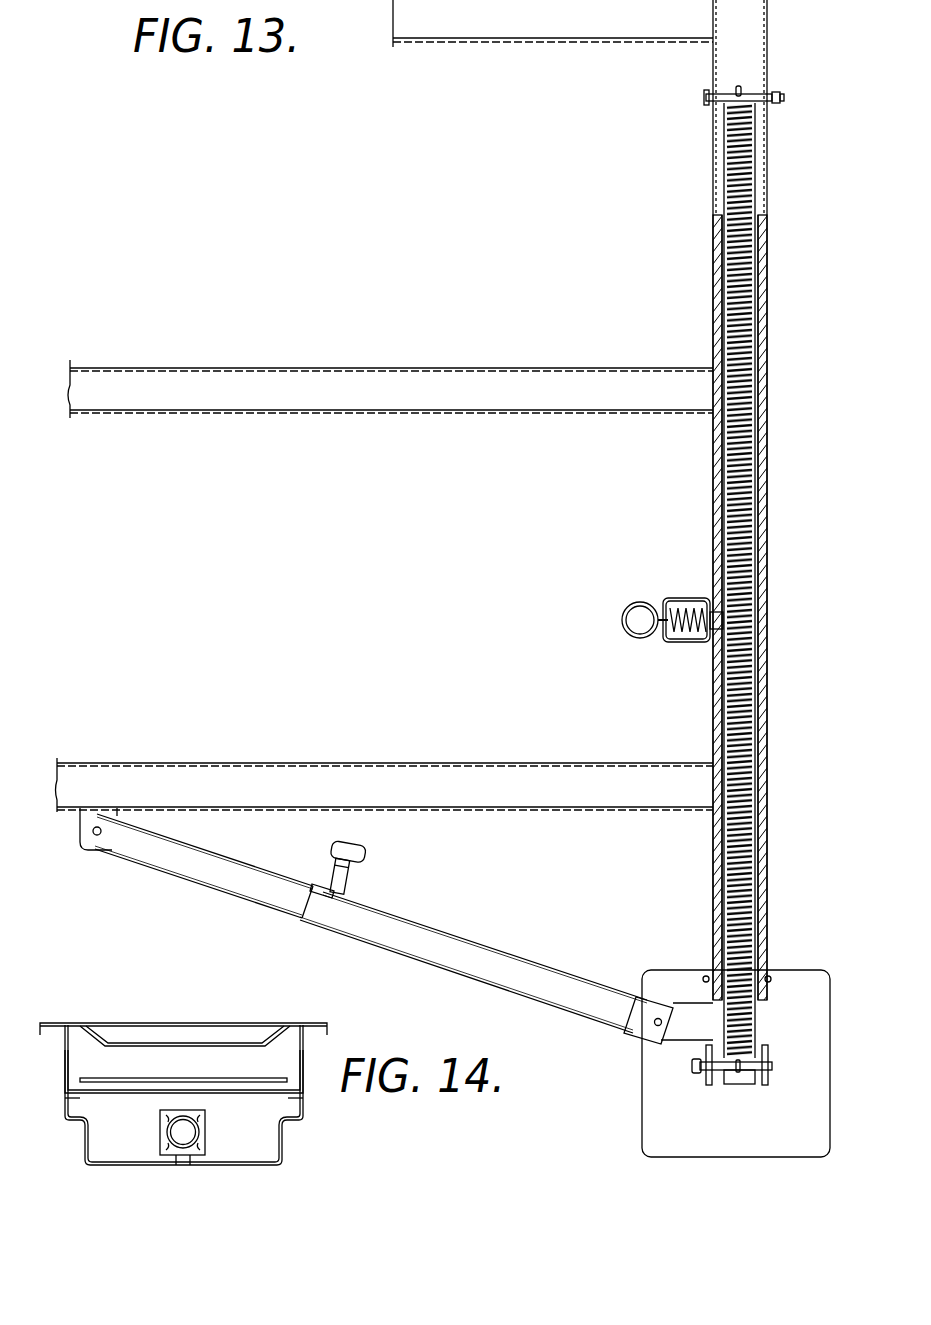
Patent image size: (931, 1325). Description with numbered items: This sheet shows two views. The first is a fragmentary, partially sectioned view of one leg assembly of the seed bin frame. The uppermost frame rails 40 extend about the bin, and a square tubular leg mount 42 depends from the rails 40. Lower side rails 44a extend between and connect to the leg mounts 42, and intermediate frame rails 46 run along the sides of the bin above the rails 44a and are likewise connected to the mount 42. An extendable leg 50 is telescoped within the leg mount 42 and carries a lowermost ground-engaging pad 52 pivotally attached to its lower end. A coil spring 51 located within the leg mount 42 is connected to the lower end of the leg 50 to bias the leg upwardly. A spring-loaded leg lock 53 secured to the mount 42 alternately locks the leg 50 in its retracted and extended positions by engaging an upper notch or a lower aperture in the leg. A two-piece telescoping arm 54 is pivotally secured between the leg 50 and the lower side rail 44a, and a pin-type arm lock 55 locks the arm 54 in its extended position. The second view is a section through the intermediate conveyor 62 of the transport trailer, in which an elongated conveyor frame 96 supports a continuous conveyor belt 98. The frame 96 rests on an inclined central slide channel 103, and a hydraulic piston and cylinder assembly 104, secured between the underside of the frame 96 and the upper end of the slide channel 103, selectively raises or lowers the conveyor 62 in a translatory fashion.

In FIG. 13, the frame rails 40 is at (466, 24).
In FIG. 13, the leg mount 42 is at (712, 124).
In FIG. 13, the intermediate frame rails 46 is at (285, 385).
In FIG. 13, the coil spring 51 is at (720, 300).
In FIG. 13, the leg lock 53 is at (683, 600).
In FIG. 13, the side rails 44a is at (410, 778).
In FIG. 13, the arm lock 55 is at (362, 862).
In FIG. 13, the telescoping arm 54 is at (548, 962).
In FIG. 13, the extendable leg 50 is at (758, 1023).
In FIG. 13, the ground-engaging pad 52 is at (658, 1111).
In FIG. 14, the intermediate conveyor 62 is at (102, 1010).
In FIG. 14, the conveyor frame 96 is at (201, 1022).
In FIG. 14, the conveyor belt 98 is at (210, 1079).
In FIG. 14, the slide channel 103 is at (282, 1143).
In FIG. 14, the hydraulic piston and cylinder assembly 104 is at (156, 1121).